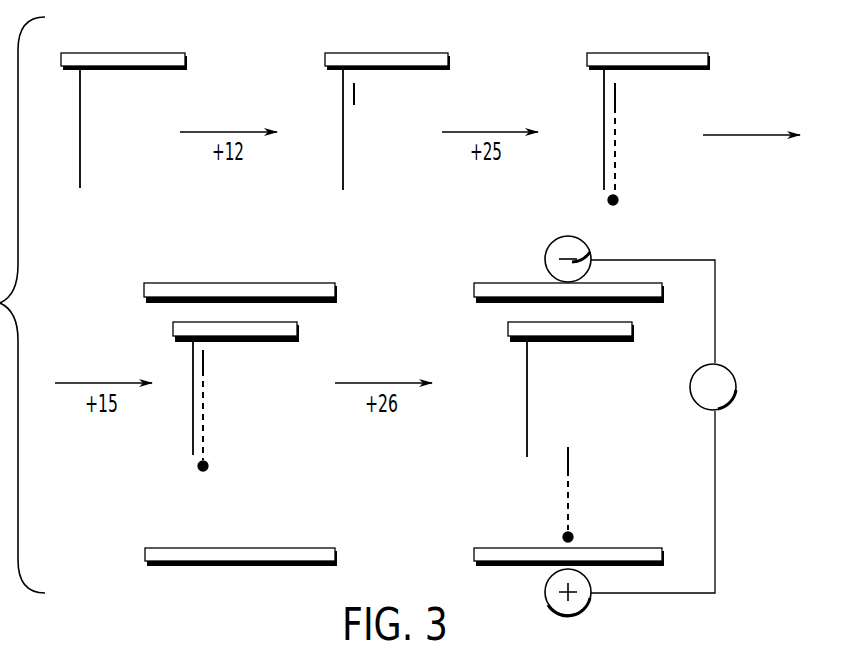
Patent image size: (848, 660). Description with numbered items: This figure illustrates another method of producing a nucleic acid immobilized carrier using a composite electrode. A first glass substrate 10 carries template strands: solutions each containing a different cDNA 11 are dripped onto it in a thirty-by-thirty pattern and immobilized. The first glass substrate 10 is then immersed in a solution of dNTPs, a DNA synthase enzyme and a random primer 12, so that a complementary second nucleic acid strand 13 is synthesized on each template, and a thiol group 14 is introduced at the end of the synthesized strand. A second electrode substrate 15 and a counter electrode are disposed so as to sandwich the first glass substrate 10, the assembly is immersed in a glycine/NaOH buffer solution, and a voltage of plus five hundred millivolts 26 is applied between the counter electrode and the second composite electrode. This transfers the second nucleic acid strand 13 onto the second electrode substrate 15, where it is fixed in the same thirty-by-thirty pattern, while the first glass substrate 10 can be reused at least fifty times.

The first glass substrate 10 is at (155, 55).
The cDNA 11 is at (82, 119).
The random primer 12 is at (356, 96).
The second nucleic acid strand 13 is at (619, 141).
The thiol group 14 is at (618, 197).
The second electrode substrate 15 is at (300, 553).
The voltage application 26 is at (738, 383).